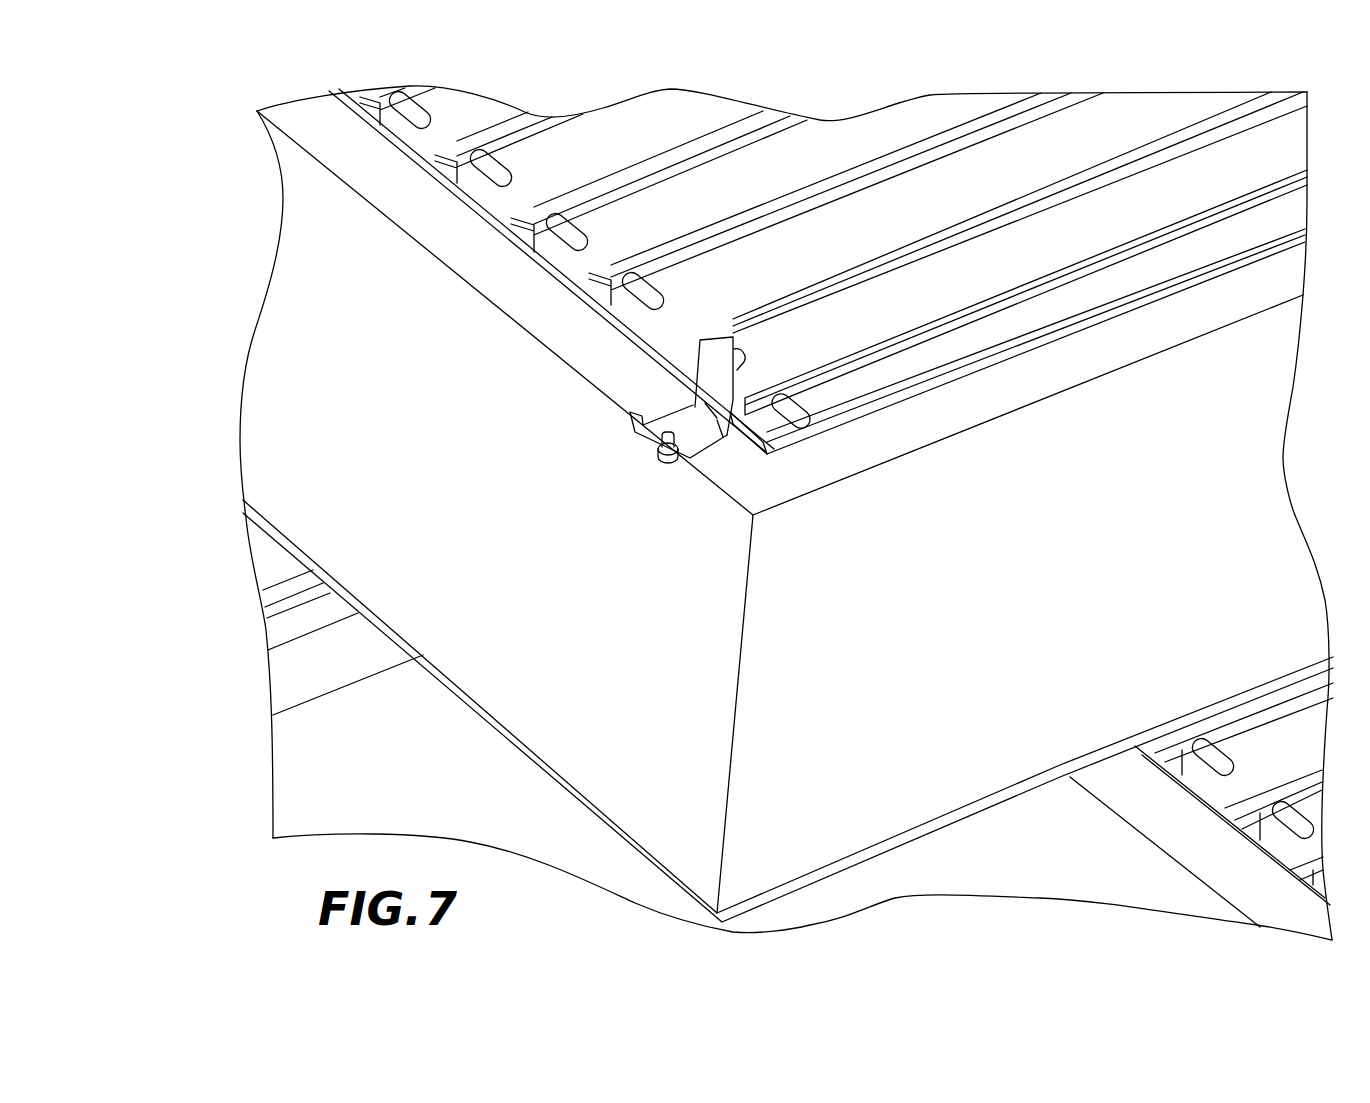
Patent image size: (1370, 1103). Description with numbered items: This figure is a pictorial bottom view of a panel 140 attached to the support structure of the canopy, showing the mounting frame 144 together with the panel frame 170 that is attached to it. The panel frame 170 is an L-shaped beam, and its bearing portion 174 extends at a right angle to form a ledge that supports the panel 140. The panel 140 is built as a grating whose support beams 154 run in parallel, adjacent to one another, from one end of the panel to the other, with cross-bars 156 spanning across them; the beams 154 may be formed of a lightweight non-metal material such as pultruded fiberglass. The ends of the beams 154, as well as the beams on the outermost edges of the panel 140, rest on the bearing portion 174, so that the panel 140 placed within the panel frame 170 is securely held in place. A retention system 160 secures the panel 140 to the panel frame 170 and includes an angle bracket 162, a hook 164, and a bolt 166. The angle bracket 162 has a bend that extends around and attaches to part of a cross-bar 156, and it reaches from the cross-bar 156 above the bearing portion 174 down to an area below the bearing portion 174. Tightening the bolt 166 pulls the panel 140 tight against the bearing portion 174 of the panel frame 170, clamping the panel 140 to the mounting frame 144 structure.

The panel 140 is at (835, 165).
The mounting frame 144 is at (965, 675).
The support beams 154 is at (990, 175).
The cross-bars 156 is at (572, 234).
The retention system 160 is at (628, 446).
The angle bracket 162 is at (697, 434).
The hook 164 is at (625, 418).
The bolt 166 is at (668, 466).
The panel frame 170 is at (1184, 321).
The bearing portion 174 is at (992, 400).